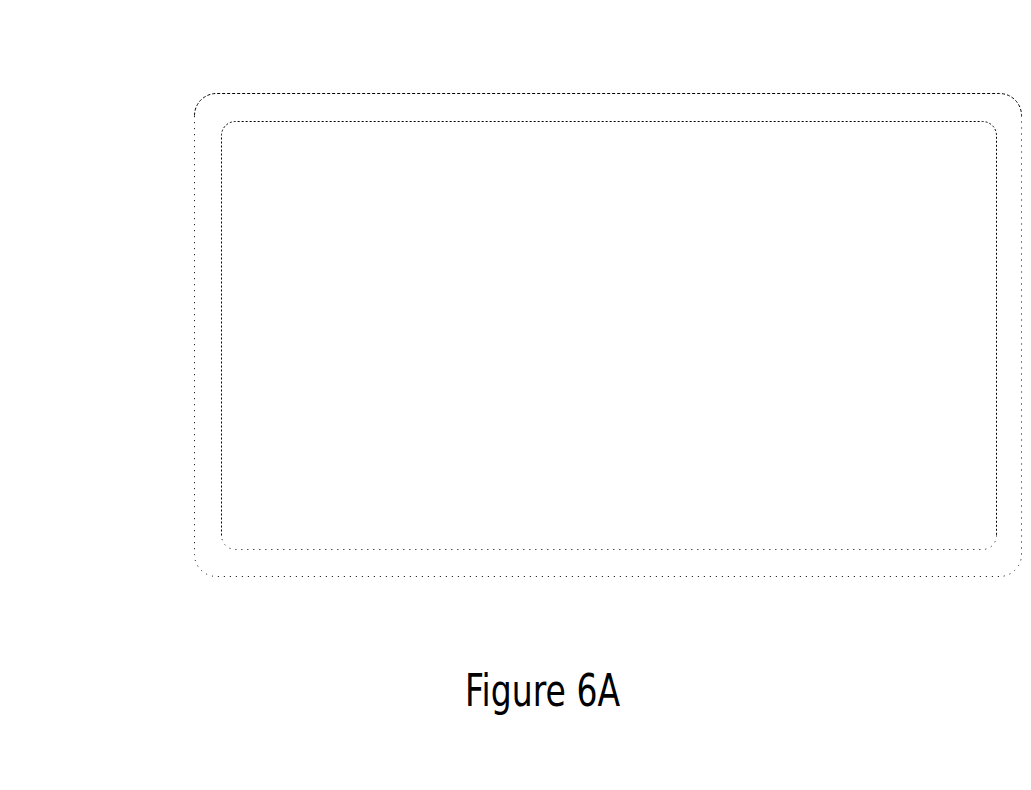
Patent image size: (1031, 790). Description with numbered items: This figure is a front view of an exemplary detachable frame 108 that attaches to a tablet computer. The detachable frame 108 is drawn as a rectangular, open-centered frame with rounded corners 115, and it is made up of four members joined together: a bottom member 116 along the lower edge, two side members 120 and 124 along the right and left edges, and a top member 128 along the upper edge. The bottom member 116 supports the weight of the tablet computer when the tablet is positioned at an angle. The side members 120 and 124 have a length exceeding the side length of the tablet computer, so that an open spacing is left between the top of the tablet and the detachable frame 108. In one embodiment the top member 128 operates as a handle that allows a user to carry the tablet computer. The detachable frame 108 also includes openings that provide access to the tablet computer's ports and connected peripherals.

The detachable frame 108 is at (920, 96).
The rounded corners 115 is at (214, 96).
The top member 128 is at (630, 95).
The bottom member 116 is at (734, 576).
The side member 124 is at (222, 284).
The side member 120 is at (996, 294).